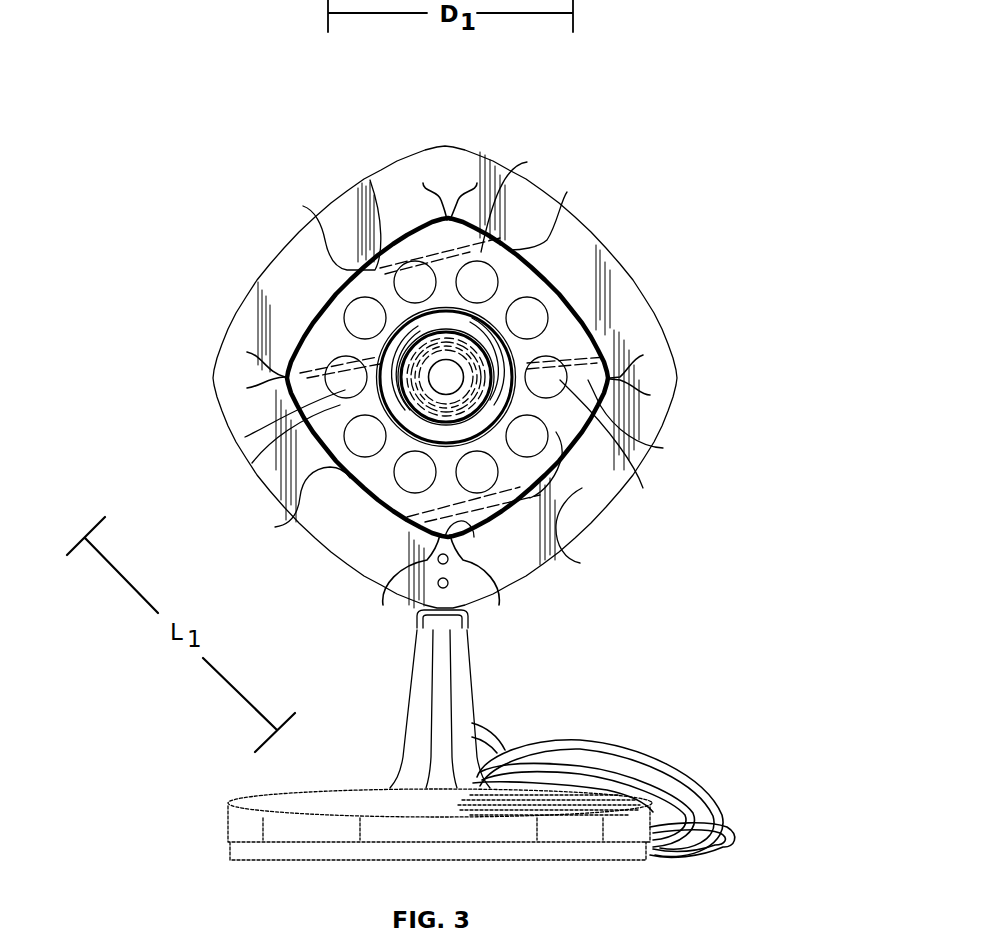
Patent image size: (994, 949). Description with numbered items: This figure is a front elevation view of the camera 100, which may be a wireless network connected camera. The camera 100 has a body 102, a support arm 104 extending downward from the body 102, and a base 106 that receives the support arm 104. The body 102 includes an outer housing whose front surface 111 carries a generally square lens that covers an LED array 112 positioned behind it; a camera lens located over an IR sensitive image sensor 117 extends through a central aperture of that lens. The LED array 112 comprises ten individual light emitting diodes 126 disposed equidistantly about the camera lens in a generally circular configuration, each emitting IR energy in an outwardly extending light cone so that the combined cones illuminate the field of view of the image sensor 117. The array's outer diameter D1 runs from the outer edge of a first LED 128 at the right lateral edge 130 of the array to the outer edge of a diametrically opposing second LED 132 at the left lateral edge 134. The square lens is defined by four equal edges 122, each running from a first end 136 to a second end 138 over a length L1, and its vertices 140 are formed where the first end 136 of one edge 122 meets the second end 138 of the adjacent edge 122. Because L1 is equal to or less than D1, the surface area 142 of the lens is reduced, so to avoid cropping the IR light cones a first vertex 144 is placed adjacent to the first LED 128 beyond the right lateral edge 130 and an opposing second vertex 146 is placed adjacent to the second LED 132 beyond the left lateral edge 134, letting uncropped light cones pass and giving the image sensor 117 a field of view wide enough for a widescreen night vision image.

The camera 100 is at (242, 114).
The body 102 is at (672, 422).
The support arm 104 is at (403, 752).
The base 106 is at (348, 803).
The front surface 111 is at (337, 210).
The LED array 112 is at (336, 328).
The IR sensitive image sensor 117 is at (478, 364).
The edge 122 is at (303, 206).
The light emitting diode 126 is at (477, 267).
The first LED 128 is at (643, 488).
The right lateral edge 130 is at (663, 448).
The second LED 132 is at (252, 463).
The left lateral edge 134 is at (245, 437).
The first end 136 is at (477, 183).
The second end 138 is at (423, 183).
The vertex 140 is at (527, 162).
The surface area 142 is at (575, 340).
The first vertex 144 is at (605, 338).
The second vertex 146 is at (293, 345).